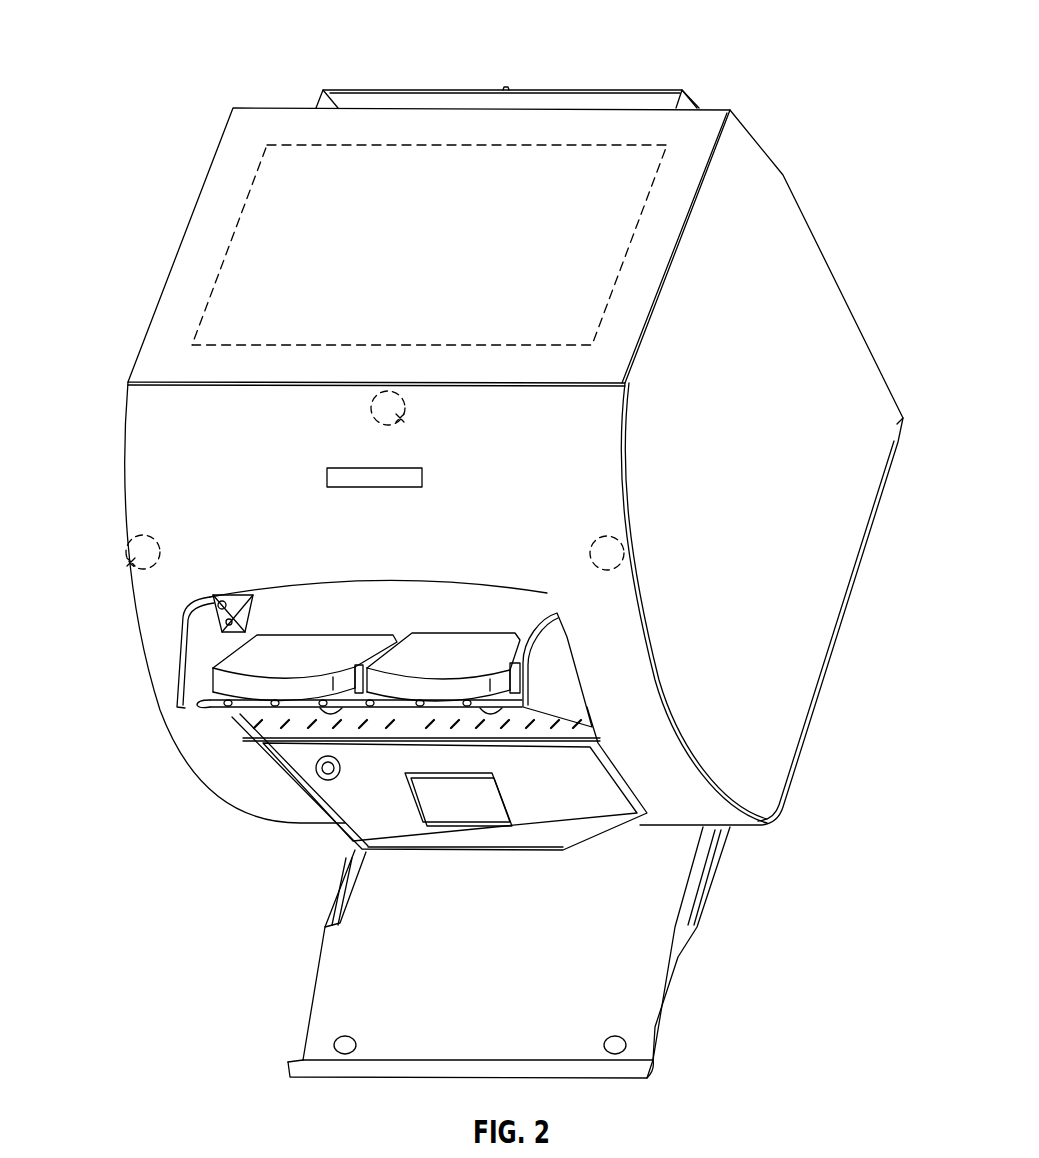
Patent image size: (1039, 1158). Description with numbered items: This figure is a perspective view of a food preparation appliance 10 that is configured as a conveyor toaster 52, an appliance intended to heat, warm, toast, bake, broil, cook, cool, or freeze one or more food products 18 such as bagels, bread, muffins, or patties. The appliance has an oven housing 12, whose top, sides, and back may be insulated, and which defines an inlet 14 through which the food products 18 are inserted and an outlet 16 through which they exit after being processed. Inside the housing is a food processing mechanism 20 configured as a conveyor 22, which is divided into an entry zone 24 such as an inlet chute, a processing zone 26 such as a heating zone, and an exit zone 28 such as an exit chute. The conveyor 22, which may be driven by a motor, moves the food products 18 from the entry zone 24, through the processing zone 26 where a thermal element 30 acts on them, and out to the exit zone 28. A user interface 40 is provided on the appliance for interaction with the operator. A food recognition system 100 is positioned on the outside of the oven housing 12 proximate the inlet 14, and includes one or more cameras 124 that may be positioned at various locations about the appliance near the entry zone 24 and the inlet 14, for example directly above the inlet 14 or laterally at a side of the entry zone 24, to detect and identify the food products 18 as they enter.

The food preparation appliance 10 is at (795, 65).
The oven housing 12 is at (813, 262).
The inlet 14 is at (283, 623).
The outlet 16 is at (392, 860).
The food products 18 is at (310, 666).
The food processing mechanism 20 is at (612, 642).
The conveyor 22 is at (307, 602).
The entry zone 24 is at (217, 718).
The processing zone 26 is at (498, 604).
The exit zone 28 is at (383, 1027).
The thermal element 30 is at (433, 146).
The user interface 40 is at (487, 797).
The conveyor toaster 52 is at (185, 50).
The food recognition system 100 is at (412, 478).
The camera 124 is at (400, 418).